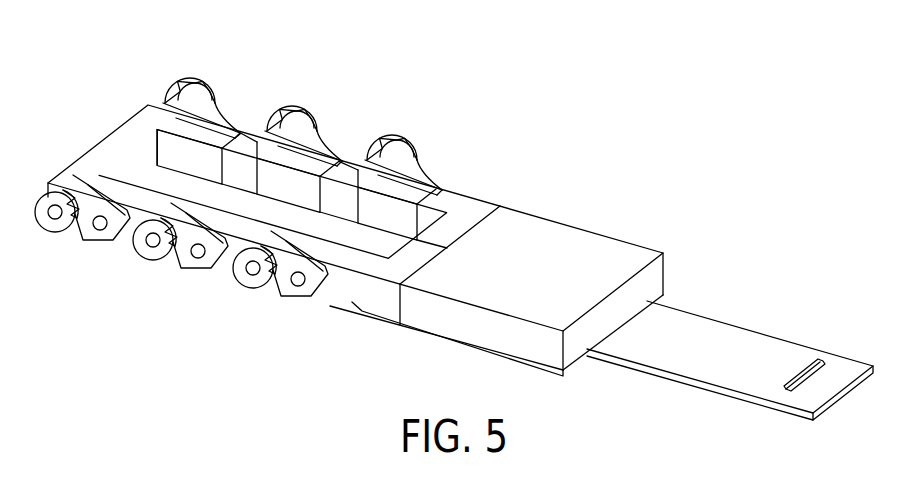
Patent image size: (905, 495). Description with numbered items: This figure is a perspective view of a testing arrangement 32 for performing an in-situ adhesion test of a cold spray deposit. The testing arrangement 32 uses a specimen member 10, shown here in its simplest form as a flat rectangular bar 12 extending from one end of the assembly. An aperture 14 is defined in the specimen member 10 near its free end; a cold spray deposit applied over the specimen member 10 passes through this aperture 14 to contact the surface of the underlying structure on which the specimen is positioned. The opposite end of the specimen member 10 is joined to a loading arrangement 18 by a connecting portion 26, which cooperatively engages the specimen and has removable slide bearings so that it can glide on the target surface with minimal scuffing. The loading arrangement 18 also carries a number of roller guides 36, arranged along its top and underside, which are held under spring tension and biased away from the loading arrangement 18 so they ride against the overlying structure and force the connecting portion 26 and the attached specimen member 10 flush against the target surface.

The specimen member 10 is at (769, 323).
The rectangular bar 12 is at (685, 327).
The aperture 14 is at (820, 361).
The loading arrangement 18 is at (439, 164).
The connecting portion 26 is at (552, 231).
The testing arrangement 32 is at (580, 136).
The roller guides 36 is at (204, 69).